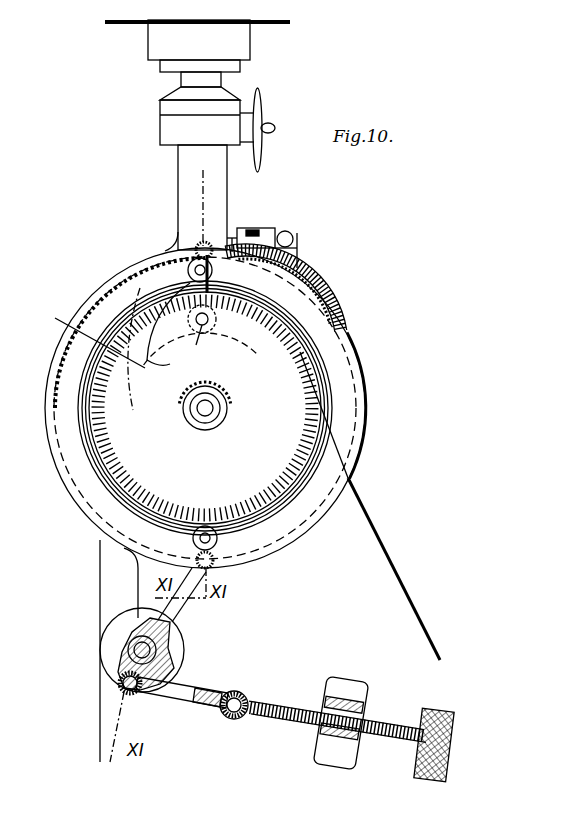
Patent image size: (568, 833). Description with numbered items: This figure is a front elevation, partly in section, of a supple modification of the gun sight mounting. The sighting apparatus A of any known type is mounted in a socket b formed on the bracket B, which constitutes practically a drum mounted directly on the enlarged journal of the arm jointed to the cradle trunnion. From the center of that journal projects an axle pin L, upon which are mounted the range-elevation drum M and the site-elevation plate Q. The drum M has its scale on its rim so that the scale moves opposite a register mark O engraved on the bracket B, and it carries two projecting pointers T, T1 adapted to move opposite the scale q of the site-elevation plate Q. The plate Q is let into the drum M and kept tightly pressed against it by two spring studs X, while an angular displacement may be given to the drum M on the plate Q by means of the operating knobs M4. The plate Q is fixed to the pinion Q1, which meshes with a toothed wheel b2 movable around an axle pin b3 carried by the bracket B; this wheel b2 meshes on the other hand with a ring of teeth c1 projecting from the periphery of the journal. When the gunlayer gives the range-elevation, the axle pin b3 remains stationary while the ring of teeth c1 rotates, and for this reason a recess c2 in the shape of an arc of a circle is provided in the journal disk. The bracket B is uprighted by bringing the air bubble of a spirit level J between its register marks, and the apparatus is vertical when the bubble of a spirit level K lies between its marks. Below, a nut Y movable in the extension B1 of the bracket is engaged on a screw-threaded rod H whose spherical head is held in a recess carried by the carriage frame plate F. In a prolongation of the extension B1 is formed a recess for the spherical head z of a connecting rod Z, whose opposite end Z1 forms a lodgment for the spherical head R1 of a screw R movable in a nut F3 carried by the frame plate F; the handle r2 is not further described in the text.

The sighting apparatus A is at (167, 128).
The socket b is at (183, 180).
The operating knobs M4 is at (190, 243).
The projecting pointer T is at (213, 246).
The toothed wheel b2 is at (235, 247).
The spirit level K is at (255, 232).
The spirit level J is at (292, 240).
The register mark O is at (318, 300).
The ring of teeth c1 is at (290, 264).
The bracket B is at (345, 338).
The range-elevation drum M is at (68, 528).
The scale q is at (293, 480).
The site-elevation plate Q is at (75, 480).
The recess c2 is at (113, 346).
The spring studs X is at (193, 405).
The projecting pointer T1 is at (206, 533).
The axle pin b3 is at (201, 335).
The axle pin L is at (203, 416).
The pinion Q1 is at (226, 399).
The frame plate F is at (375, 572).
The extension B1 is at (142, 587).
The nut Y is at (120, 648).
The screw-threaded rod H is at (165, 645).
The spherical head z is at (120, 690).
The connecting rod Z is at (180, 698).
The spherical head R1 is at (240, 700).
The end of connecting rod Z1 is at (240, 716).
The screw R is at (290, 708).
The nut F3 is at (318, 740).
The knurled handle r2 is at (430, 720).